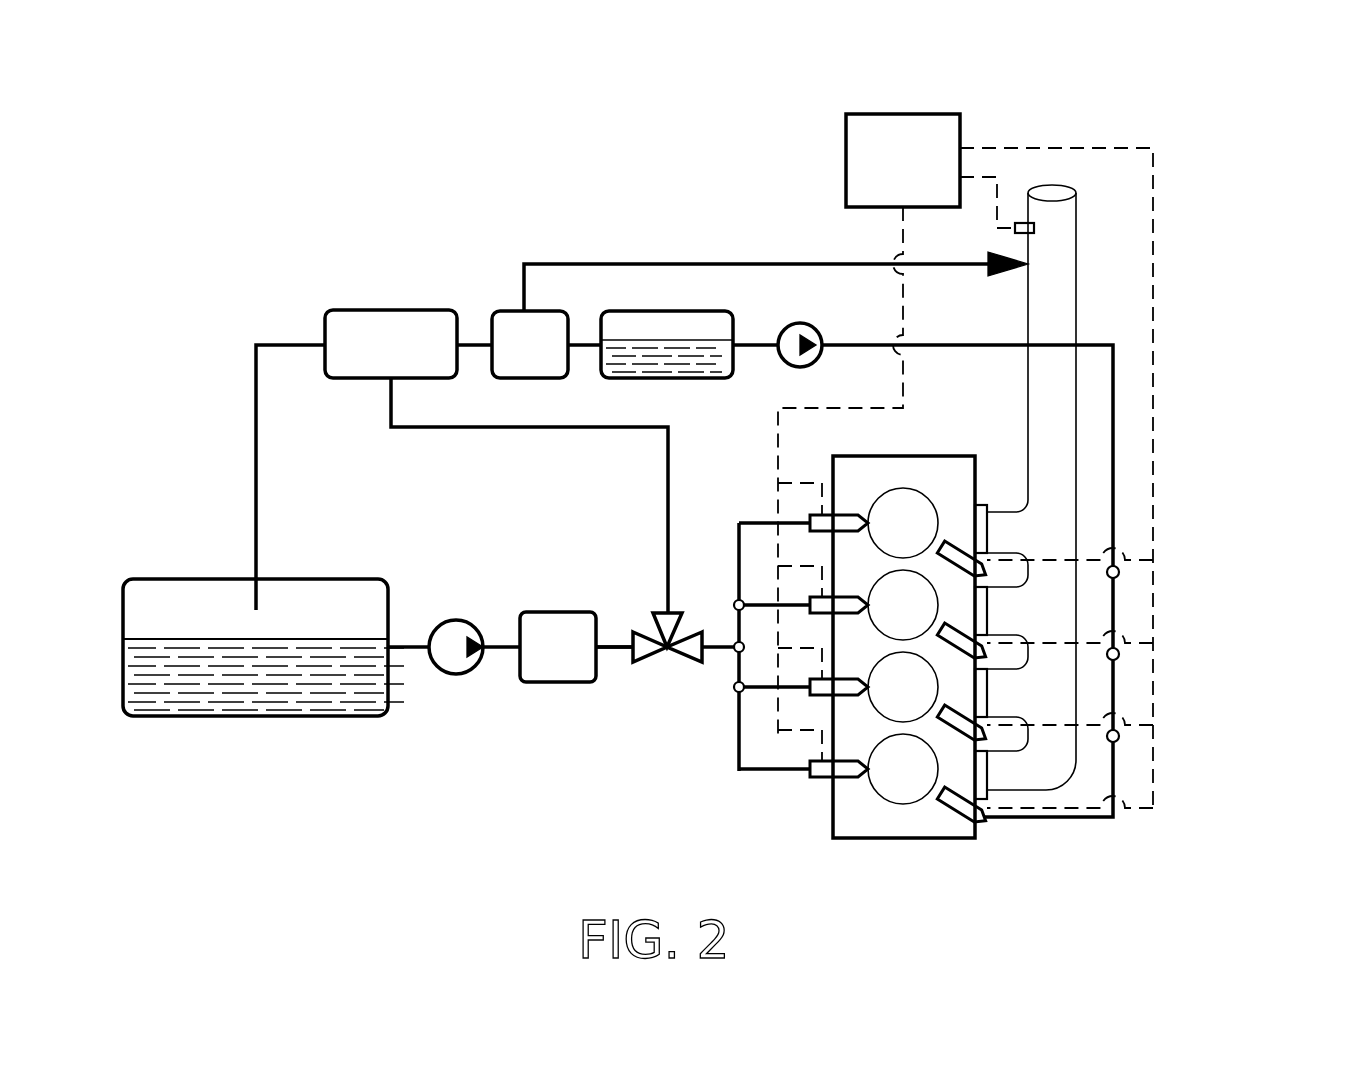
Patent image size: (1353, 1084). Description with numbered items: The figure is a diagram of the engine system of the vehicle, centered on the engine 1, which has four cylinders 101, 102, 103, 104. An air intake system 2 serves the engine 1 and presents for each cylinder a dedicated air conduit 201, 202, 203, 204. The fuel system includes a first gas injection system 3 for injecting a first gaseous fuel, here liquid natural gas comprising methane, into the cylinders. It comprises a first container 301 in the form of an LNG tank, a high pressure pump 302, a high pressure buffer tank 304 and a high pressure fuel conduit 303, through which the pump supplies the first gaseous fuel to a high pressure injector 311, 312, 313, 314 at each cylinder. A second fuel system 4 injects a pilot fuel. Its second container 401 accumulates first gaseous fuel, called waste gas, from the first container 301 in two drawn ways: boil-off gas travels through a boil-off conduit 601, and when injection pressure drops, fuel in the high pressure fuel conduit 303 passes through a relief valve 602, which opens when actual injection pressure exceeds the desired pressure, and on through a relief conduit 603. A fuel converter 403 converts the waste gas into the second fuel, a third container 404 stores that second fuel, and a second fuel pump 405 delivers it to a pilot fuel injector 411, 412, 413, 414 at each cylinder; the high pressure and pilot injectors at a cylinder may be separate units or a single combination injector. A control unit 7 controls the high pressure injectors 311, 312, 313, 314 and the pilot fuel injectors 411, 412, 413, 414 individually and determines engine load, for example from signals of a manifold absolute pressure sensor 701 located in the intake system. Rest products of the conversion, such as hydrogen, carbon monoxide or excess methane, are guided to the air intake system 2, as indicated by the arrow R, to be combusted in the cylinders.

The engine 1 is at (903, 838).
The air intake system 2 is at (1077, 420).
The first gas injection system 3 is at (175, 530).
The second fuel system 4 is at (420, 148).
The control unit 7 is at (900, 114).
The arrow indicating rest products R is at (580, 264).
The cylinder 101 is at (923, 538).
The cylinder 102 is at (923, 620).
The cylinder 103 is at (923, 702).
The cylinder 104 is at (923, 784).
The air conduit 201 is at (992, 557).
The air conduit 202 is at (992, 640).
The air conduit 203 is at (992, 722).
The air conduit 204 is at (992, 790).
The first container 301 is at (252, 716).
The high pressure pump 302 is at (456, 675).
The high pressure fuel conduit 303 is at (612, 645).
The high pressure buffer tank 304 is at (558, 682).
The high pressure injector 311 is at (810, 520).
The high pressure injector 312 is at (810, 602).
The high pressure injector 313 is at (822, 695).
The high pressure injector 314 is at (822, 777).
The second container 401 is at (383, 311).
The fuel converter 403 is at (505, 311).
The third container 404 is at (697, 311).
The second fuel pump 405 is at (795, 323).
The pilot fuel injector 411 is at (1000, 598).
The pilot fuel injector 412 is at (1000, 680).
The pilot fuel injector 413 is at (1000, 762).
The pilot fuel injector 414 is at (963, 830).
The boil-off conduit 601 is at (256, 470).
The relief valve 602 is at (672, 662).
The relief conduit 603 is at (668, 510).
The manifold absolute pressure sensor 701 is at (1034, 228).